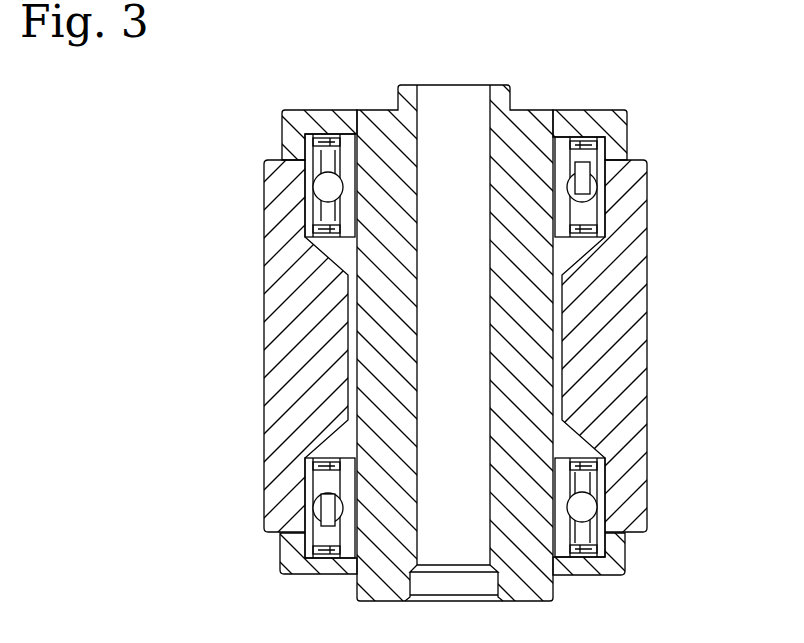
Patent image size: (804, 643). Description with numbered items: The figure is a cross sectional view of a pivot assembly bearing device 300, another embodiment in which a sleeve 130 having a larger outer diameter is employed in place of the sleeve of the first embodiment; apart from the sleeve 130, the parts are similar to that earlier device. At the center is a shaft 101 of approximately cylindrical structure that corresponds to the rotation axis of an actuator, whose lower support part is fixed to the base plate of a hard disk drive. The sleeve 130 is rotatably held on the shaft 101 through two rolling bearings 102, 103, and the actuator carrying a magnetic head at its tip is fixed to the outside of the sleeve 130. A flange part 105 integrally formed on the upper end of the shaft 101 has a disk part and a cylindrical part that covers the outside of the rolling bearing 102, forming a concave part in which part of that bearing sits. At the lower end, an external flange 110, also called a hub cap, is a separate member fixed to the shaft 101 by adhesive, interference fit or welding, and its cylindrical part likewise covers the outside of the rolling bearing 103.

The pivot assembly bearing device 300 is at (670, 131).
The shaft 101 is at (535, 130).
The rolling bearing 102 is at (308, 175).
The rolling bearing 103 is at (310, 481).
The flange part 105 is at (289, 105).
The external flange 110 is at (306, 580).
The sleeve 130 is at (283, 315).